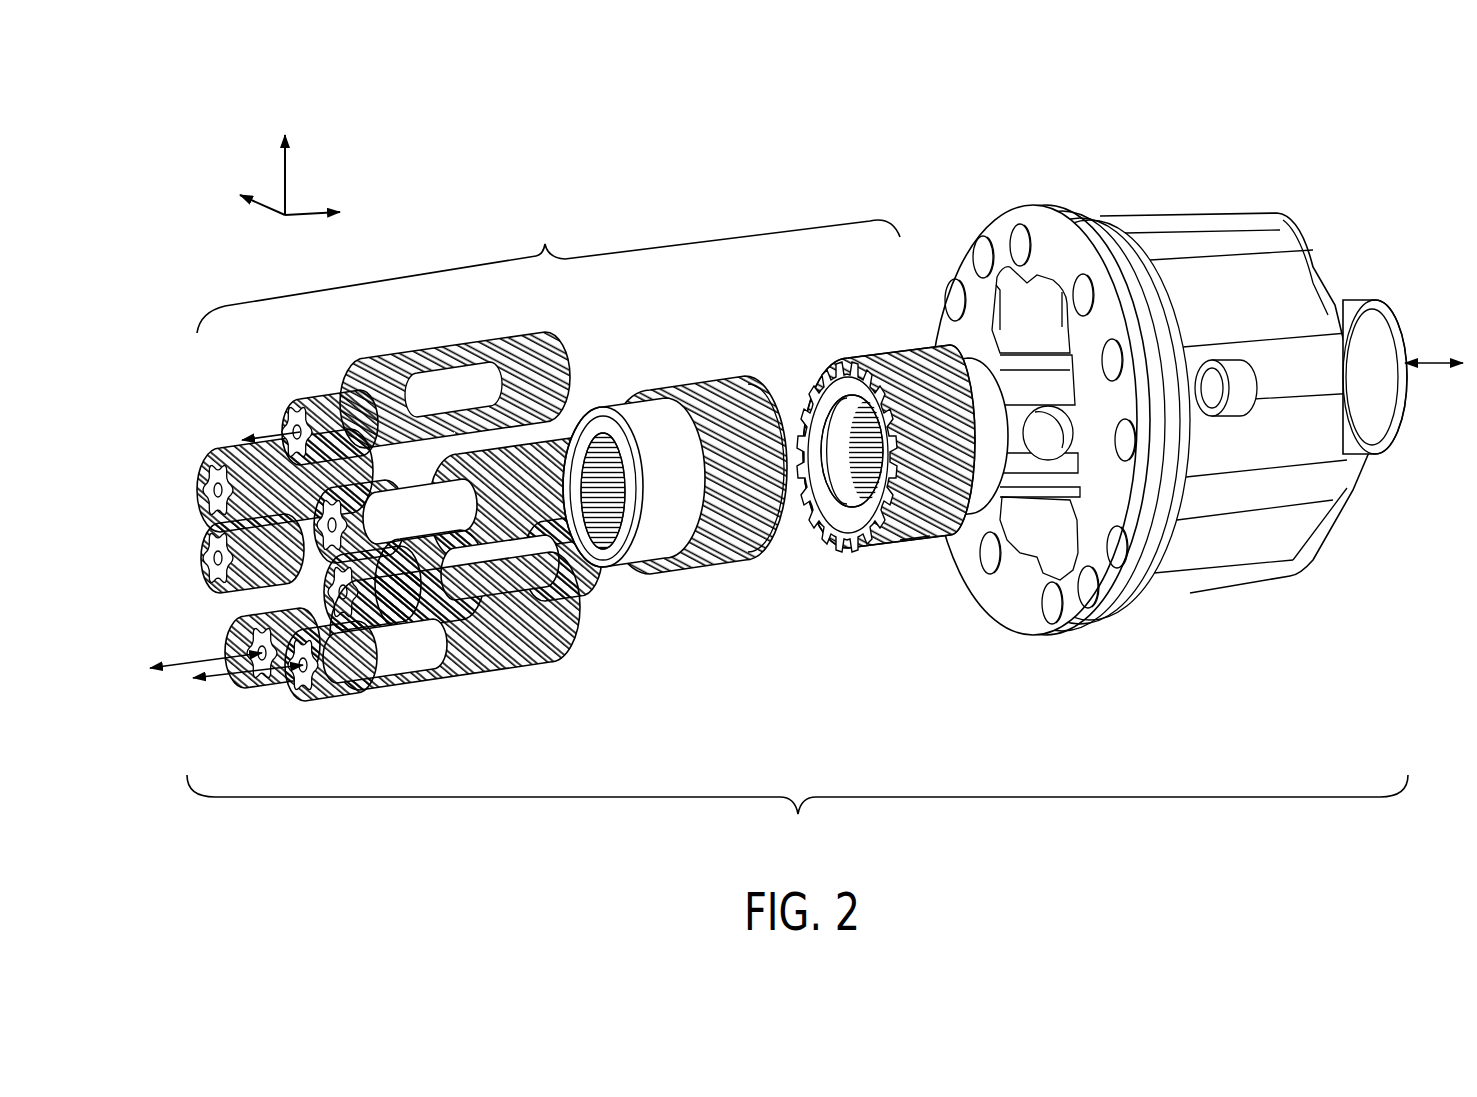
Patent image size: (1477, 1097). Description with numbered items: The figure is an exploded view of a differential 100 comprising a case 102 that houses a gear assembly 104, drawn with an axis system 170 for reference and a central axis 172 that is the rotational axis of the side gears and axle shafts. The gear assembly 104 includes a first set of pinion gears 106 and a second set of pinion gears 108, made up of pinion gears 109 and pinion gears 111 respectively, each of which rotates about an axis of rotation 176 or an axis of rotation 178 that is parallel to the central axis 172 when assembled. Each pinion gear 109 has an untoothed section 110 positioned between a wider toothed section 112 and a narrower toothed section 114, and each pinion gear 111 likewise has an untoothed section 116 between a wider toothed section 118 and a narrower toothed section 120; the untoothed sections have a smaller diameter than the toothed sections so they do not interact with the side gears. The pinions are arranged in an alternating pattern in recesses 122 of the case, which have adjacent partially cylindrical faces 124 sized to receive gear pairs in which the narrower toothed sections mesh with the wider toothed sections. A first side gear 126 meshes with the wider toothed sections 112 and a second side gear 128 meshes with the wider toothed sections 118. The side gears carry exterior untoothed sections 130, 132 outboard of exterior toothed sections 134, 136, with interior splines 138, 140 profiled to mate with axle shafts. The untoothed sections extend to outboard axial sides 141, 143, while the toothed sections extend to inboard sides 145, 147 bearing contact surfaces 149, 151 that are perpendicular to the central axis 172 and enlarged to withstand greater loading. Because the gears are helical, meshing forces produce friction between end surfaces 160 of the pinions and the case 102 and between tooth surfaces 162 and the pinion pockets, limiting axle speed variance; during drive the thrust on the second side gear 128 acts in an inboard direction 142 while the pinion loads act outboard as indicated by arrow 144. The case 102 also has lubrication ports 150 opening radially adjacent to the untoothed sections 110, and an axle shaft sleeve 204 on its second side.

The differential 100 is at (797, 812).
The case 102 is at (1185, 414).
The gear assembly 104 is at (548, 274).
The first set of pinion gears 106 is at (195, 572).
The second set of pinion gears 108 is at (196, 481).
The pinion gear 109 is at (322, 528).
The untoothed section 110 is at (436, 527).
The pinion gear 111 is at (335, 593).
The wider toothed section 112 is at (528, 468).
The narrower toothed section 114 is at (350, 492).
The untoothed section 116 is at (513, 579).
The wider toothed section 118 is at (393, 617).
The narrower toothed section 120 is at (565, 582).
The recess 122 is at (1028, 568).
The partially cylindrical face 124 is at (1022, 540).
The first side gear 126 is at (874, 432).
The second side gear 128 is at (700, 493).
The exterior untoothed section 130 is at (990, 482).
The exterior untoothed section 132 is at (666, 530).
The exterior toothed section 134 is at (918, 512).
The exterior toothed section 136 is at (727, 564).
The interior splines 138 is at (865, 482).
The interior splines 140 is at (627, 504).
The outboard axial side 141 is at (990, 380).
The inboard direction 142 is at (786, 382).
The outboard axial side 143 is at (568, 422).
The arrow 144 is at (262, 428).
The inboard side 145 is at (846, 547).
The inboard side 147 is at (778, 565).
The contact surface 149 is at (836, 392).
The lubrication port 150 is at (1228, 362).
The contact surface 151 is at (812, 362).
The end surface 160 is at (270, 423).
The tooth surface 162 is at (323, 393).
The axis system 170 is at (343, 142).
The central axis 172 is at (1440, 366).
The axis of rotation 176 is at (225, 682).
The axis of rotation 178 is at (185, 668).
The axle shaft sleeve 204 is at (1360, 290).